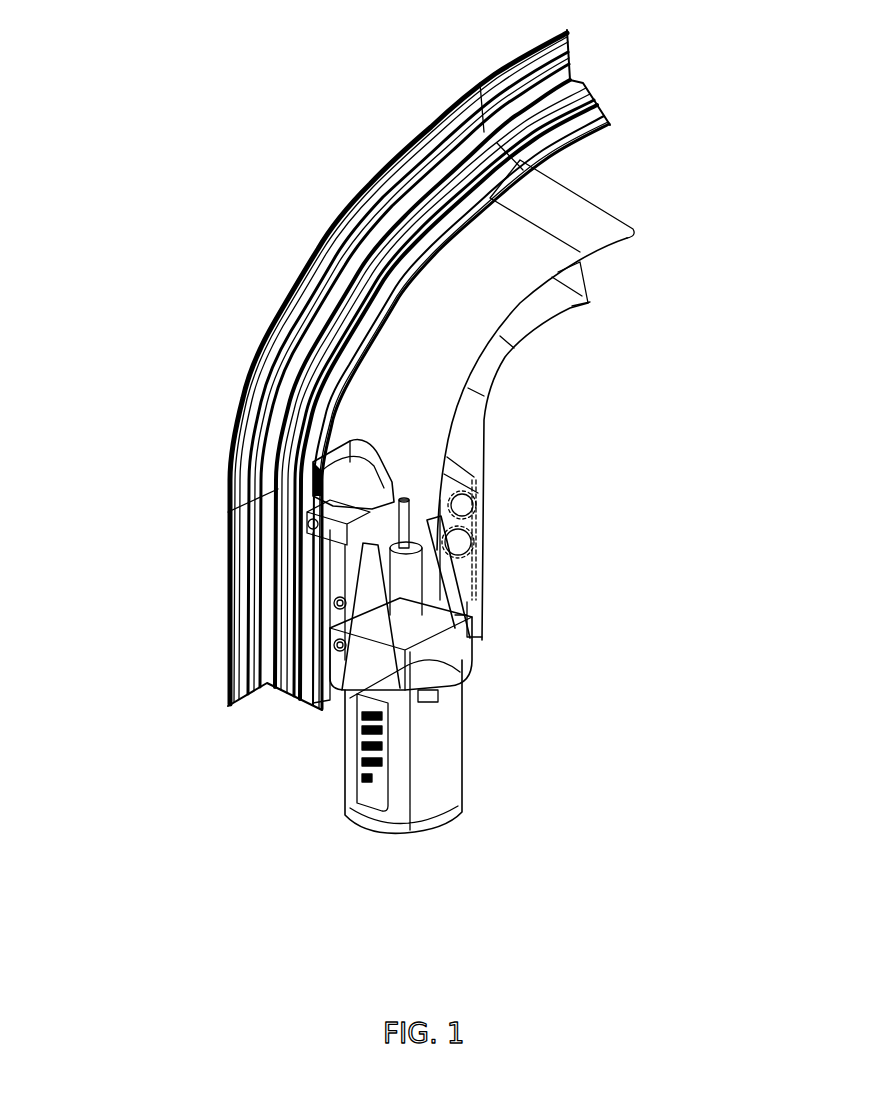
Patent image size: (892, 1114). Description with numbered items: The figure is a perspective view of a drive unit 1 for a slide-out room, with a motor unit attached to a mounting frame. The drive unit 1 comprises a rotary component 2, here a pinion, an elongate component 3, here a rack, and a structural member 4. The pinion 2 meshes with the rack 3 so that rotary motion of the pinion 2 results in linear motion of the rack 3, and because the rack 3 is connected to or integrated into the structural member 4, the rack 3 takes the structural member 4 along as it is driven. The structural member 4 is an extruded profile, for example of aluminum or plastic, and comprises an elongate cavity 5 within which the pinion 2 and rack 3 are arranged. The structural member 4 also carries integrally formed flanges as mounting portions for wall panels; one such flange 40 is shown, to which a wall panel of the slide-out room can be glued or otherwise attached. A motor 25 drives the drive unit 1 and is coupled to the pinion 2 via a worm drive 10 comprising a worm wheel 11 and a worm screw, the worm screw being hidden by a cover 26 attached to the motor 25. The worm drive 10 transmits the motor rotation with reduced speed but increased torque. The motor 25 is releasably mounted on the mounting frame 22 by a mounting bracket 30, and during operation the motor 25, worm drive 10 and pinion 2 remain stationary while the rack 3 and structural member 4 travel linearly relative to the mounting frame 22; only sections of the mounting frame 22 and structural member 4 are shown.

The drive unit 1 is at (434, 455).
The rotary component 2 is at (480, 530).
The elongate component 3 is at (478, 493).
The structural member 4 is at (408, 382).
The elongate cavity 5 is at (548, 498).
The worm drive 10 is at (393, 418).
The worm wheel 11 is at (403, 578).
The mounting frame 22 is at (445, 115).
The motor 25 is at (437, 757).
The cover 26 is at (345, 604).
The mounting bracket 30 is at (357, 490).
The flange 40 is at (592, 228).